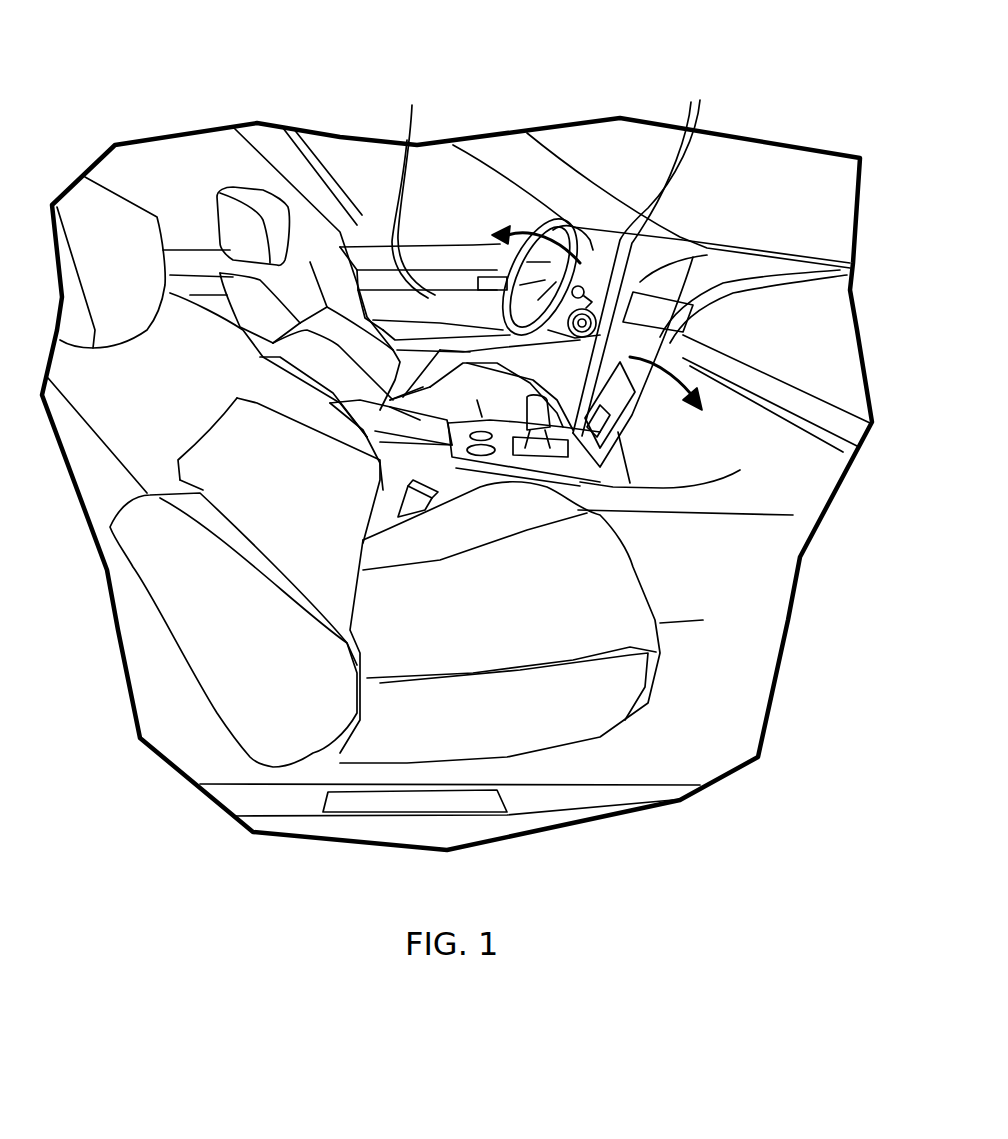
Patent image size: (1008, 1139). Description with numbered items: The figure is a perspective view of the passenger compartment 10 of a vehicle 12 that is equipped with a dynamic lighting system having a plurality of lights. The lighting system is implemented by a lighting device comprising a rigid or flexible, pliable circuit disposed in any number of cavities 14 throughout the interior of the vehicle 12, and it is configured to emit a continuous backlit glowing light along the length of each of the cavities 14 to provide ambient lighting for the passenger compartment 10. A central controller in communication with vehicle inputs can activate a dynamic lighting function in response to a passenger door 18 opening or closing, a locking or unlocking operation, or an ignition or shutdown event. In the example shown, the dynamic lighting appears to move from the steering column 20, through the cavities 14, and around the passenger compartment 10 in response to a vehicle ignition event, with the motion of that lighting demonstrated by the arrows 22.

The passenger compartment 10 is at (160, 671).
The vehicle 12 is at (786, 77).
The cavities 14 is at (200, 282).
The passenger door 18 is at (372, 244).
The steering column 20 is at (587, 247).
The arrows 22 is at (578, 258).